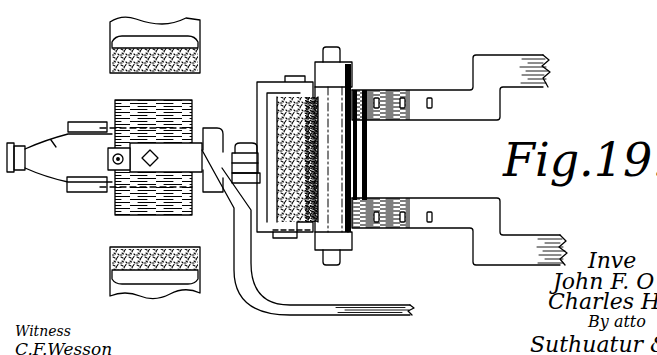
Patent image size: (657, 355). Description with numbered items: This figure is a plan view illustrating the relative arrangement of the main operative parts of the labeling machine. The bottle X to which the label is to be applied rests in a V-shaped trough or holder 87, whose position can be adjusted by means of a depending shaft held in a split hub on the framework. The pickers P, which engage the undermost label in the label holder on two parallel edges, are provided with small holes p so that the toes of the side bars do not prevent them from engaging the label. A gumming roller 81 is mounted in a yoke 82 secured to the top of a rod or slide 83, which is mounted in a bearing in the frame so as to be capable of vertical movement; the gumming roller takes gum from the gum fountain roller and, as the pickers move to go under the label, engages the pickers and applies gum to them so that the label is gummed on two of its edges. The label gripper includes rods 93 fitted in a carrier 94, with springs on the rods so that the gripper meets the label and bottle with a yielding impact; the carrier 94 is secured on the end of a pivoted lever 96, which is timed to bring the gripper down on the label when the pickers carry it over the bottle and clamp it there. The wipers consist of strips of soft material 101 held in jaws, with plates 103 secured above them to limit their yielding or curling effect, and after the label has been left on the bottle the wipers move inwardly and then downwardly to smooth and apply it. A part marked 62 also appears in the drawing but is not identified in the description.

The shaft 62 is at (364, 173).
The gumming roller 81 is at (280, 108).
The yoke 82 is at (271, 234).
The rod or slide 83 is at (240, 152).
The V-shaped trough or holder 87 is at (67, 190).
The rods 93 is at (118, 153).
The carrier 94 is at (121, 171).
The pivoted lever 96 is at (370, 315).
The strips of soft material 101 is at (120, 58).
The plates 103 is at (127, 44).
The bottle X is at (58, 144).
The pickers P is at (454, 97).
The small holes p is at (428, 106).